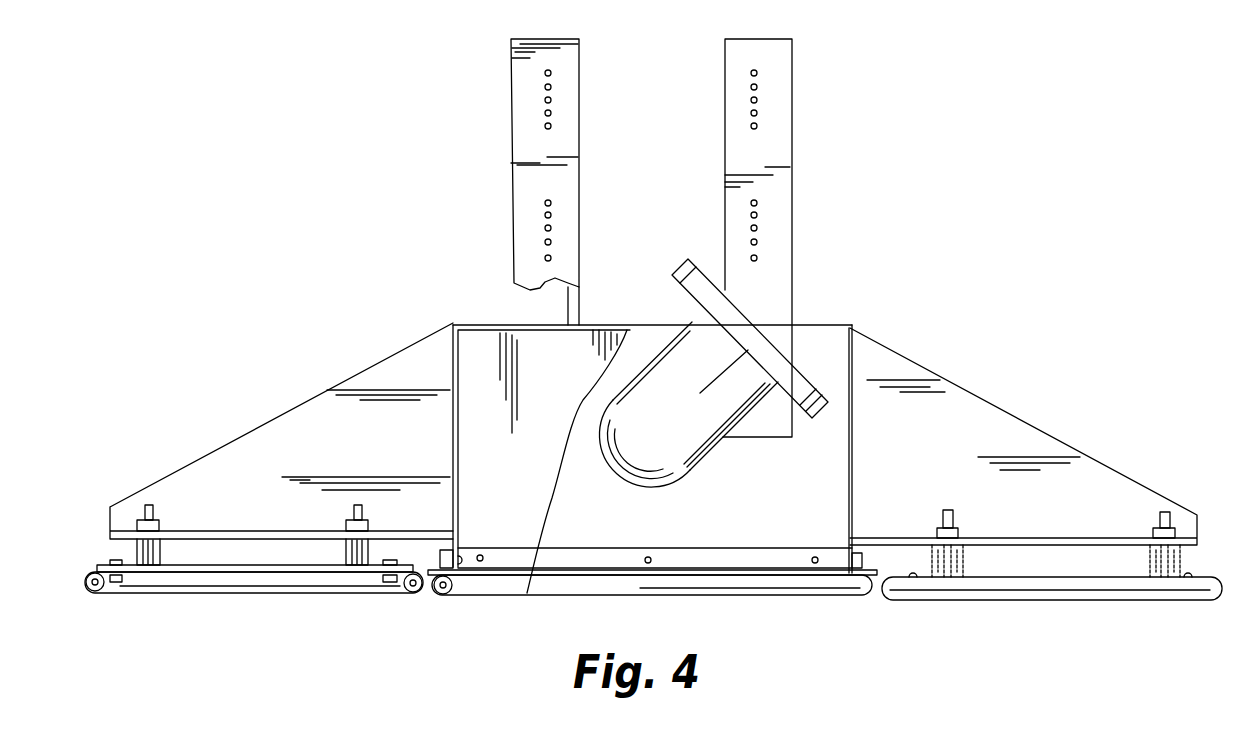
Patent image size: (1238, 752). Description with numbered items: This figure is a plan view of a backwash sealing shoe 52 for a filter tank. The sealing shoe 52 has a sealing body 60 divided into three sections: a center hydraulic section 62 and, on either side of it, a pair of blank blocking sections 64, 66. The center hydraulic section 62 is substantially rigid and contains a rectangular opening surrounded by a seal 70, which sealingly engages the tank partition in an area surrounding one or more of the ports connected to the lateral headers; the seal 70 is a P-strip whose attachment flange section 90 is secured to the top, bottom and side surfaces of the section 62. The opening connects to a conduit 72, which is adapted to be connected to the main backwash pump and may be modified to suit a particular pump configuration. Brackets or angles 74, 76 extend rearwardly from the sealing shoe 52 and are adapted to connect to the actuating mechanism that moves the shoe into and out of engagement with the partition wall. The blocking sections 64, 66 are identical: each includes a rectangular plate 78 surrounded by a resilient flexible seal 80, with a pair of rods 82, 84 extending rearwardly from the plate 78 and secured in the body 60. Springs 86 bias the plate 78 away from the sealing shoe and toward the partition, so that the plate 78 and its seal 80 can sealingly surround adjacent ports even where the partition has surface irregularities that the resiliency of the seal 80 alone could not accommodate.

The sealing shoe 52 is at (1012, 393).
The sealing body 60 is at (931, 367).
The center hydraulic section 62 is at (482, 331).
The blocking section 64 is at (281, 425).
The blocking section 66 is at (1098, 483).
The seal 70 is at (477, 587).
The conduit 72 is at (680, 448).
The bracket or angle 74 is at (511, 111).
The bracket or angle 76 is at (792, 130).
The rectangular plate 78 is at (230, 572).
The resilient flexible seal 80 is at (173, 587).
The rod 82 is at (133, 550).
The rod 84 is at (352, 548).
The spring 86 is at (162, 552).
The attachment flange section 90 is at (736, 561).